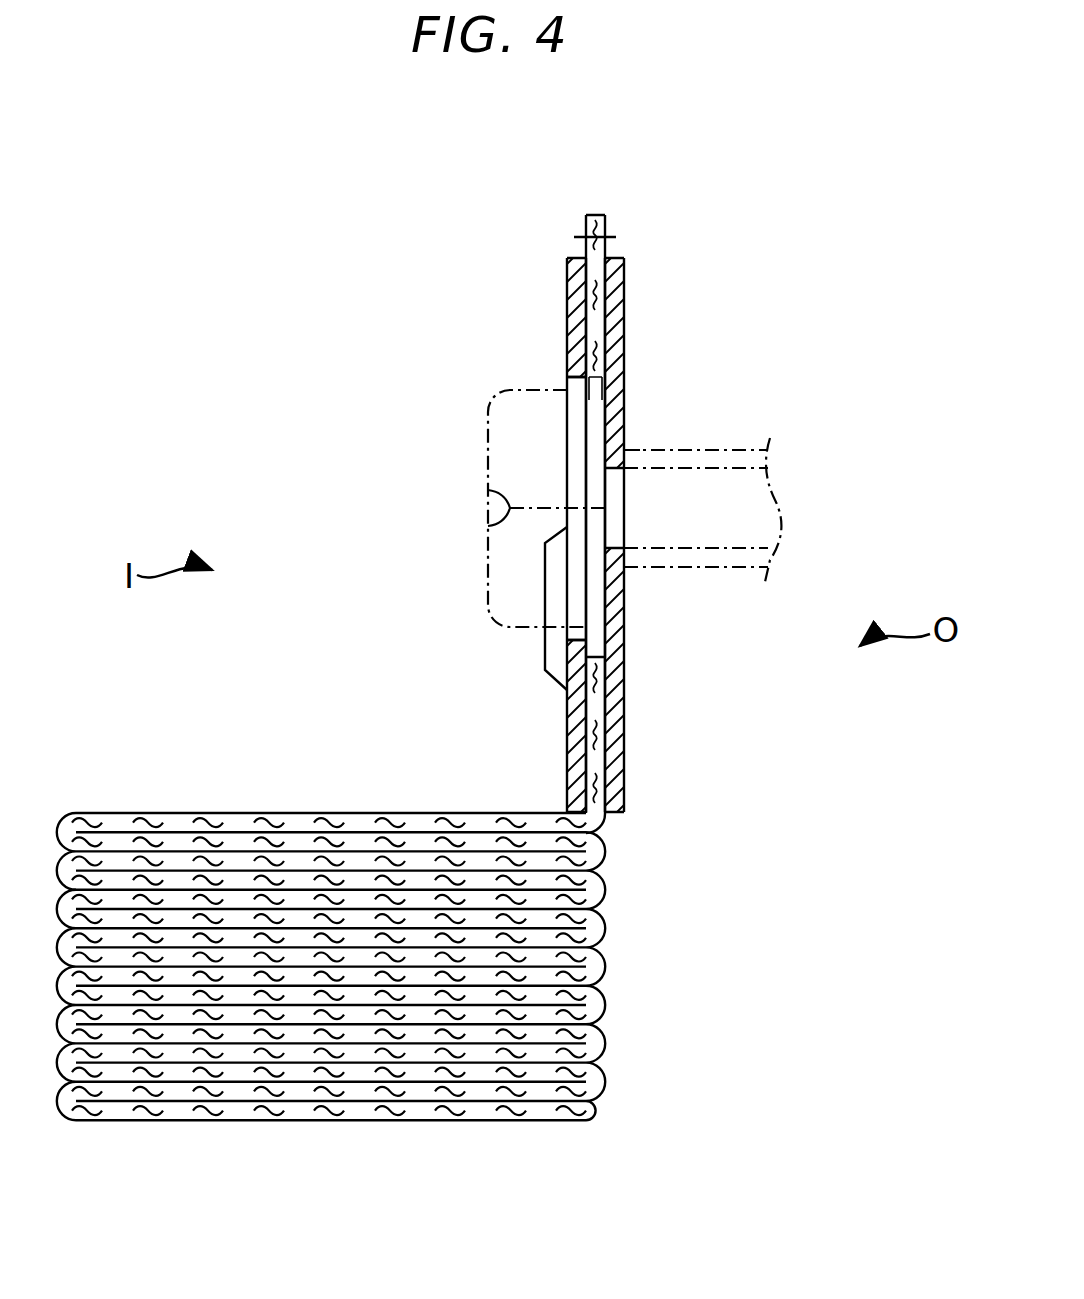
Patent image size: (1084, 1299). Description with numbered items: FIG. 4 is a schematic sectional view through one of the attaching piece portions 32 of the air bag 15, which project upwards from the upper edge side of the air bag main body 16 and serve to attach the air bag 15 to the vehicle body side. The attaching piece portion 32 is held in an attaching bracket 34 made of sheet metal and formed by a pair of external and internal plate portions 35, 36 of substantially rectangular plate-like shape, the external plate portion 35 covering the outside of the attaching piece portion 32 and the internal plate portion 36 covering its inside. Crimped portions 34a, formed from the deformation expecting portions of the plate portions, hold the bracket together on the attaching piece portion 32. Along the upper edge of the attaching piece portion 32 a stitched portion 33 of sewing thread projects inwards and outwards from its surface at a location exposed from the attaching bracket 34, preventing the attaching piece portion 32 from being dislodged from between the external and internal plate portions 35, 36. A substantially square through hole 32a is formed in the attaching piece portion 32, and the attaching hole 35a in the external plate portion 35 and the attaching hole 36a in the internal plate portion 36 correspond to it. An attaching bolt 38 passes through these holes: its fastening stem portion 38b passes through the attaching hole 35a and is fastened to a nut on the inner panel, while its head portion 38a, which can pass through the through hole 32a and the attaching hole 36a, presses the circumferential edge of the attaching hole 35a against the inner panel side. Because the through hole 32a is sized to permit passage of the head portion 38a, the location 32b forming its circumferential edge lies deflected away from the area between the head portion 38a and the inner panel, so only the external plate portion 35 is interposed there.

The air bag 15 is at (755, 706).
The air bag main body 16 is at (626, 843).
The attaching piece portion 32 is at (606, 770).
The through hole 32a is at (593, 378).
The circumferential edge location 32b is at (567, 322).
The stitched portion 33 is at (612, 233).
The attaching bracket 34 is at (735, 176).
The crimped portion 34a is at (548, 673).
The external plate portion 35 is at (613, 303).
The attaching hole 35a is at (626, 453).
The internal plate portion 36 is at (624, 258).
The attaching hole 36a is at (575, 401).
The attaching bolt 38 is at (474, 555).
The head portion 38a is at (507, 470).
The fastening stem portion 38b is at (770, 512).